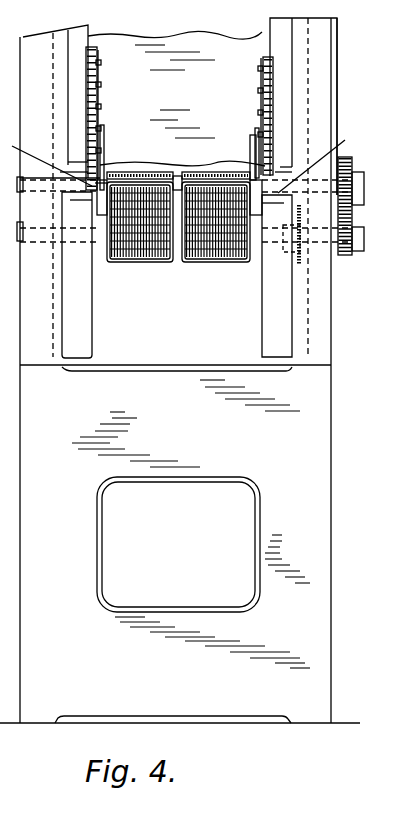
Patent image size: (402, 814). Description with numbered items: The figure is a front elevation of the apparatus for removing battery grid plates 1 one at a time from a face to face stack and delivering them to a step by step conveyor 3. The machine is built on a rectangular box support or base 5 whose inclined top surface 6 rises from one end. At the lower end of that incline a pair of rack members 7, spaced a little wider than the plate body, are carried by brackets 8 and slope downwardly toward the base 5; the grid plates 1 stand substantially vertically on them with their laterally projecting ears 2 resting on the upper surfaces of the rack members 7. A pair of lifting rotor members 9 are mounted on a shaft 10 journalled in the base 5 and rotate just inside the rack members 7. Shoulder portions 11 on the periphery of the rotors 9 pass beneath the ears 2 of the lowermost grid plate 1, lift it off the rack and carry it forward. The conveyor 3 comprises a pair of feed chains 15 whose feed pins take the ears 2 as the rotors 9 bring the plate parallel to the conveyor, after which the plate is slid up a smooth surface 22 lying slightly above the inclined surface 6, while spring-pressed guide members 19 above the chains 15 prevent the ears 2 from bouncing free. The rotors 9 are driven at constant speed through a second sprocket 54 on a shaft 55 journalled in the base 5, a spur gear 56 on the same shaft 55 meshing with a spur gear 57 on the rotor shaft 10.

The grid plate 1 is at (210, 265).
The ears 2 is at (105, 180).
The step by step conveyor 3 is at (100, 72).
The box support or base 5 is at (333, 587).
The inclined top surface 6 is at (312, 91).
The rack members 7 is at (179, 158).
The brackets 8 is at (92, 332).
The lifting rotor members 9 is at (103, 140).
The shaft 10 is at (50, 171).
The shoulder portions 11 is at (266, 138).
The feed chains 15 is at (100, 106).
The guide members 19 is at (78, 45).
The smooth surface 22 is at (190, 45).
The second sprocket 54 is at (300, 267).
The shaft 55 is at (42, 240).
The spur gear 56 is at (362, 250).
The spur gear 57 is at (353, 164).